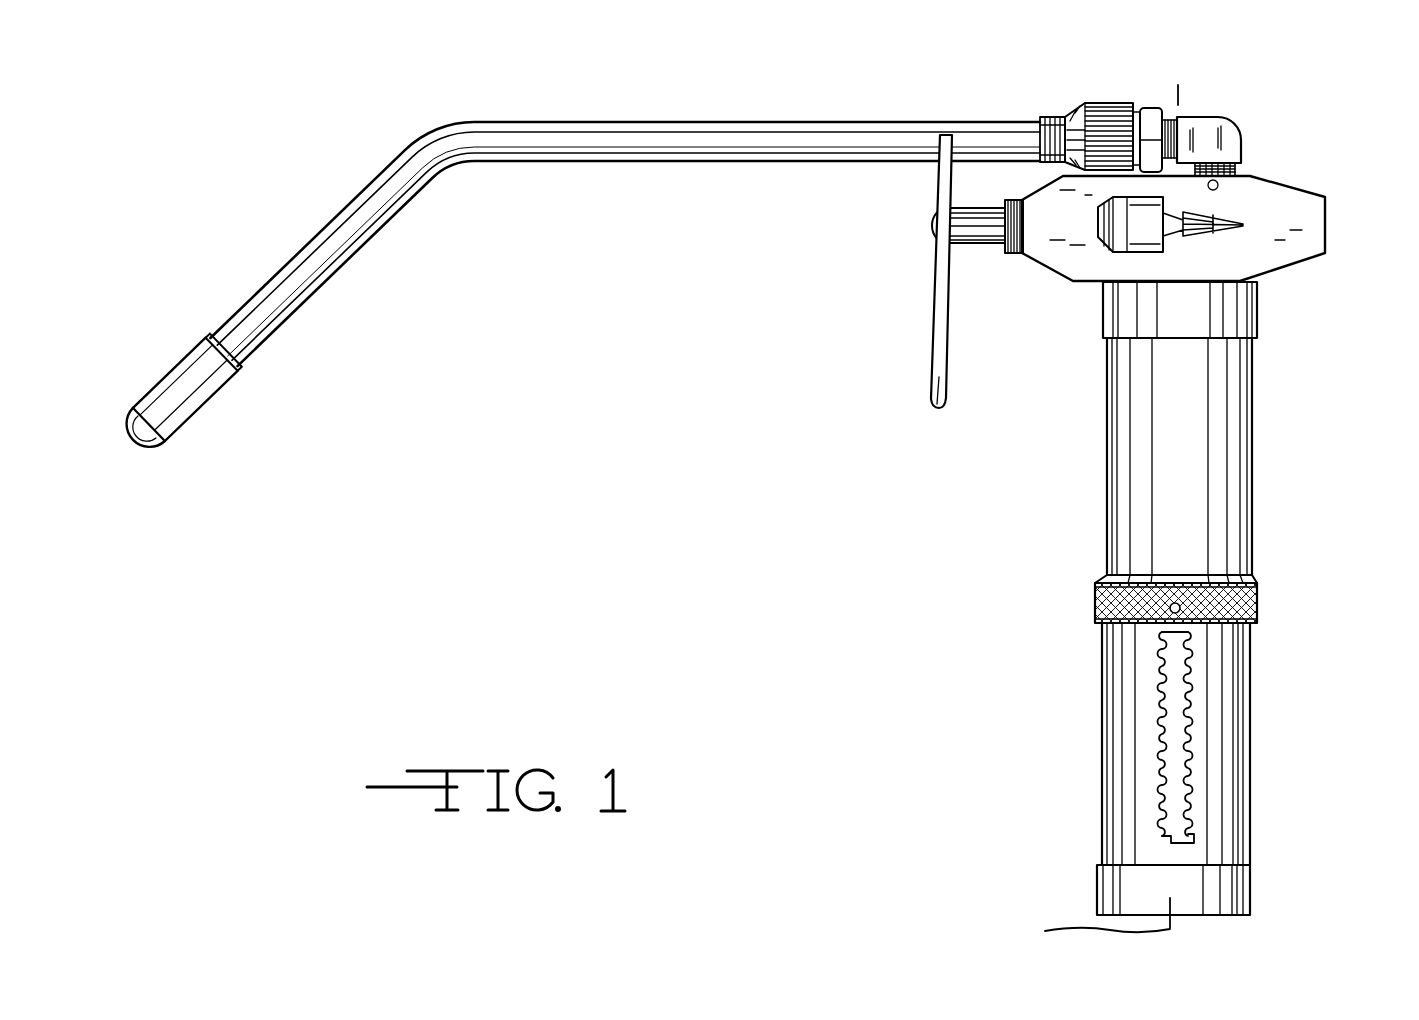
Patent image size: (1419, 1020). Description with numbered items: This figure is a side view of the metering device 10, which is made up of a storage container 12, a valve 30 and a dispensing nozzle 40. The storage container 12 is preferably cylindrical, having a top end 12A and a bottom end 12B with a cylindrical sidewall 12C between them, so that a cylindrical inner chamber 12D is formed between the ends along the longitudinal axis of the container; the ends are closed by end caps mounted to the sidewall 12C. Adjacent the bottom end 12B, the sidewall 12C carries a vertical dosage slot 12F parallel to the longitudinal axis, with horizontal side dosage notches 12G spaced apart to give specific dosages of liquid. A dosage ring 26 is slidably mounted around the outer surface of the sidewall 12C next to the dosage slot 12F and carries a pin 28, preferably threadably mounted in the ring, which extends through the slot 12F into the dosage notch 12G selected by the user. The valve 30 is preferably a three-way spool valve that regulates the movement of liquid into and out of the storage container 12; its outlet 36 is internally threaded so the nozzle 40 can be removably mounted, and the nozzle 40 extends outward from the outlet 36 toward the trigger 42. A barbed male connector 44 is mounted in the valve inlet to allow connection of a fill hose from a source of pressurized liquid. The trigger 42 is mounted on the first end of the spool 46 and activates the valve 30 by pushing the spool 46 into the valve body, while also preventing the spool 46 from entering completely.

The metering device 10 is at (1287, 363).
The storage container 12 is at (1235, 596).
The top end 12A is at (1257, 300).
The bottom end 12B is at (1255, 890).
The cylindrical sidewall 12C is at (1252, 398).
The cylindrical inner chamber 12D is at (1178, 692).
The vertical dosage slot 12F is at (1163, 778).
The horizontal side dosage notches 12G is at (1195, 823).
The dosage ring 26 is at (1262, 600).
The pin 28 is at (1258, 580).
The valve 30 is at (1310, 207).
The outlet 36 is at (1238, 130).
The dispensing nozzle 40 is at (488, 118).
The trigger 42 is at (935, 318).
The barbed male connector 44 is at (1153, 212).
The spool 46 is at (985, 248).